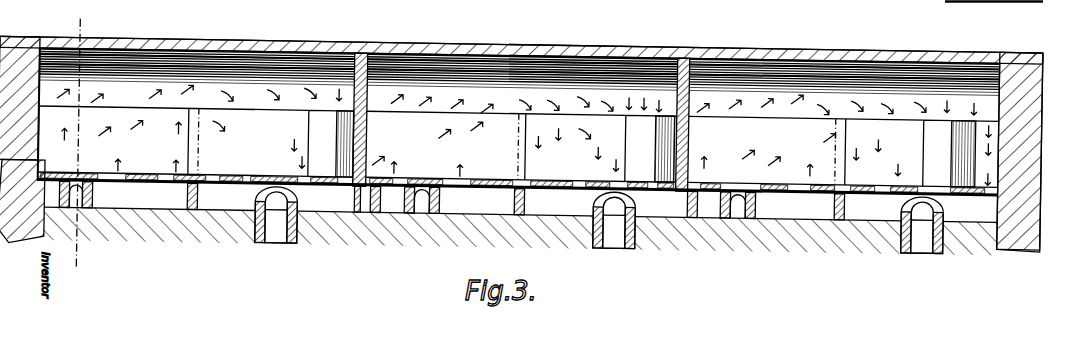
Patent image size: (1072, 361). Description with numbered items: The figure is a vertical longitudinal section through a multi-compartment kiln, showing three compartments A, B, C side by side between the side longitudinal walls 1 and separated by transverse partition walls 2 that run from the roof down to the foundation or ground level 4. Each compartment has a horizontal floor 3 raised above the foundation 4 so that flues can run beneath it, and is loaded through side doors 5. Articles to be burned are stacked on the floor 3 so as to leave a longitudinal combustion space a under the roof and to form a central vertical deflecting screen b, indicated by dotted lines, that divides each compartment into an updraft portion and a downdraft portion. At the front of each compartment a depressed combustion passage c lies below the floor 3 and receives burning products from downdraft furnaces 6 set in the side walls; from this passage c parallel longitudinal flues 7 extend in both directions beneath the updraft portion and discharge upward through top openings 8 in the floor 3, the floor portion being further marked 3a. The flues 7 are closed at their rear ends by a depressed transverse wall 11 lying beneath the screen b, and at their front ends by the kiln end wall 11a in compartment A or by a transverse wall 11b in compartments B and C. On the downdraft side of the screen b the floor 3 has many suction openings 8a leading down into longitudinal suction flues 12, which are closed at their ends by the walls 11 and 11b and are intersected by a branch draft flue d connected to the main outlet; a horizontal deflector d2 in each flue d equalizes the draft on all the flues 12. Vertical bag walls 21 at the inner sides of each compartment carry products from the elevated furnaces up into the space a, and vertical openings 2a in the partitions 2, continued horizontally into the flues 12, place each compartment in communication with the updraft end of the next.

The side longitudinal walls 1 is at (521, 147).
The transverse partition walls 2 is at (1046, 191).
The transverse vertical openings 2a is at (480, 130).
The horizontal floor 3 is at (518, 150).
The chamber openings 3a is at (458, 128).
The foundation or ground level 4 is at (465, 231).
The side doors 5 is at (287, 15).
The downdraft furnaces 6 is at (360, 48).
The longitudinal updraft distributing flues 7 is at (657, 172).
The top openings 8 is at (54, 173).
The suction or outlet openings 8a is at (216, 176).
The transverse vertical wall 11 is at (857, 198).
The left hand end wall 11a is at (30, 232).
The transverse vertical front end wall 11b is at (381, 190).
The suction or downdraft flues 12 is at (612, 203).
The vertical bag walls 21 is at (653, 148).
The longitudinal combustion space a is at (524, 124).
The vertical deflecting screen or partition b is at (515, 130).
The depressed combustion chamber or passage c is at (82, 206).
The branch outlet or draft flues d is at (283, 222).
The horizontal longitudinal deflector d2 is at (910, 223).
The compartment A is at (190, 19).
The compartment B is at (535, 25).
The compartment C is at (871, 27).